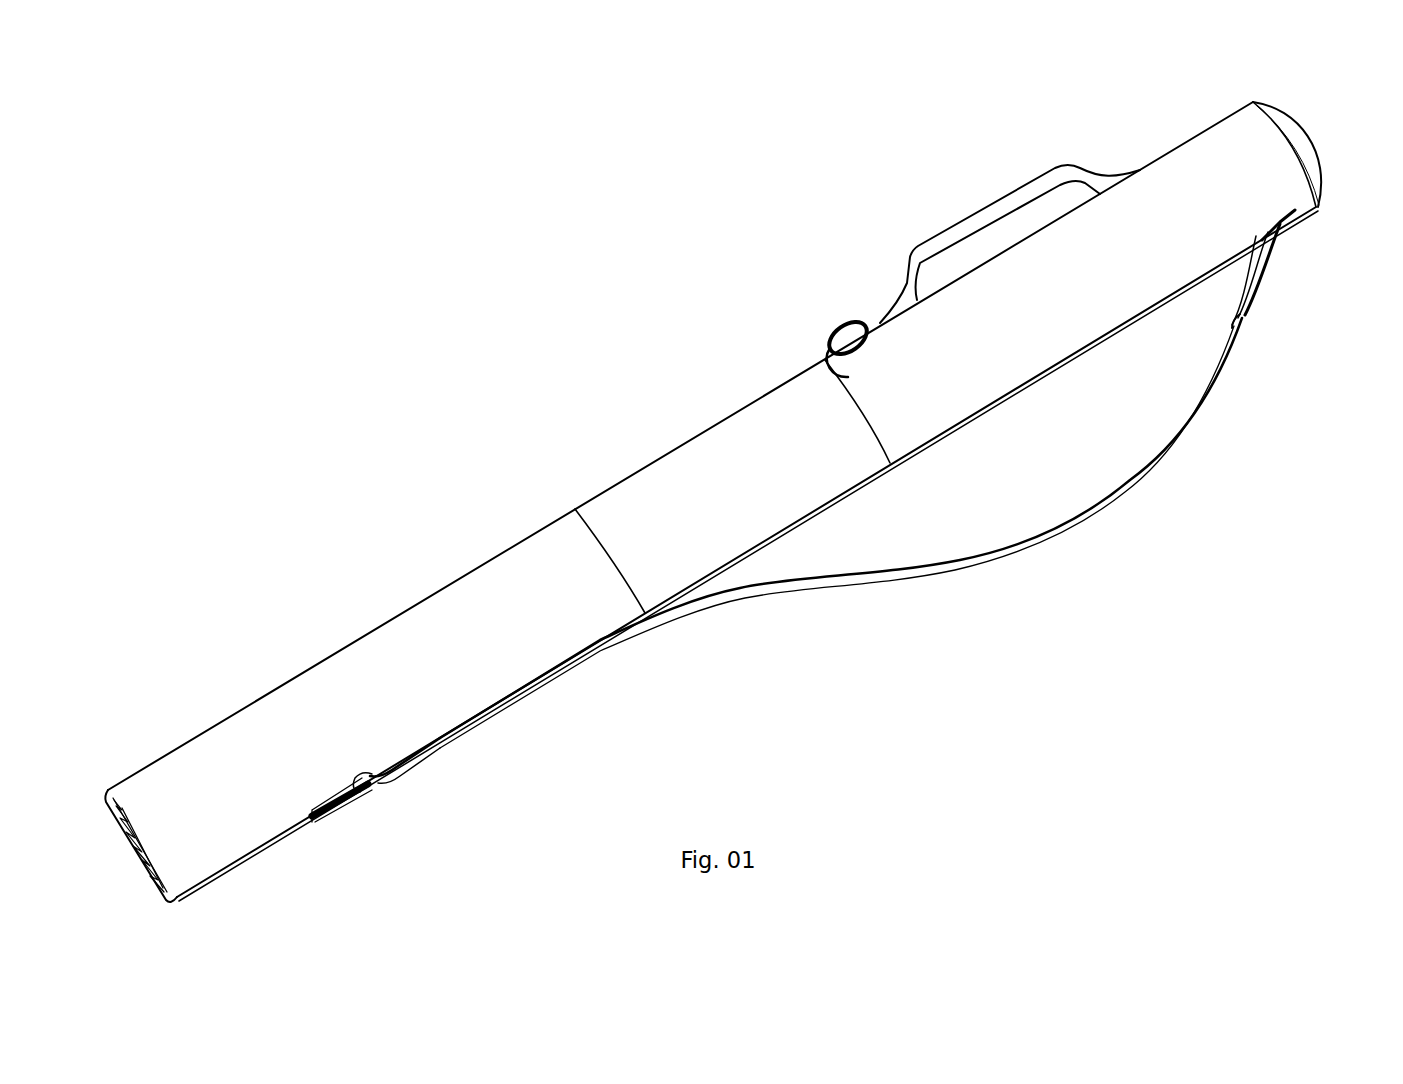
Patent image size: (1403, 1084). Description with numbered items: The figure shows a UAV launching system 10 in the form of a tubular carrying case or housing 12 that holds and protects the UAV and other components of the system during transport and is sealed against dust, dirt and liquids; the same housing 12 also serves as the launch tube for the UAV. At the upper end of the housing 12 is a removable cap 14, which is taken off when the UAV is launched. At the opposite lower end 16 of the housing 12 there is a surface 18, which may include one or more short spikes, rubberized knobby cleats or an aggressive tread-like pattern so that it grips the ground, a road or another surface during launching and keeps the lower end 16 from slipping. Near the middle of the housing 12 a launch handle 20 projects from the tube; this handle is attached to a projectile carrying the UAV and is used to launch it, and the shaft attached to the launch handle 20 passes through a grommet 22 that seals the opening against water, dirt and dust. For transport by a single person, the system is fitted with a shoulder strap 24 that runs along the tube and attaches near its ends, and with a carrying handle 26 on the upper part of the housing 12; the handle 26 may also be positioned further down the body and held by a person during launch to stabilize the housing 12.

The UAV launching system 10 is at (470, 252).
The housing 12 is at (613, 490).
The removable cap 14 is at (1293, 133).
The lower end 16 is at (127, 680).
The surface 18 is at (148, 852).
The launch handle 20 is at (842, 328).
The grommet 22 is at (857, 337).
The strap 24 is at (1125, 487).
The handle 26 is at (990, 213).